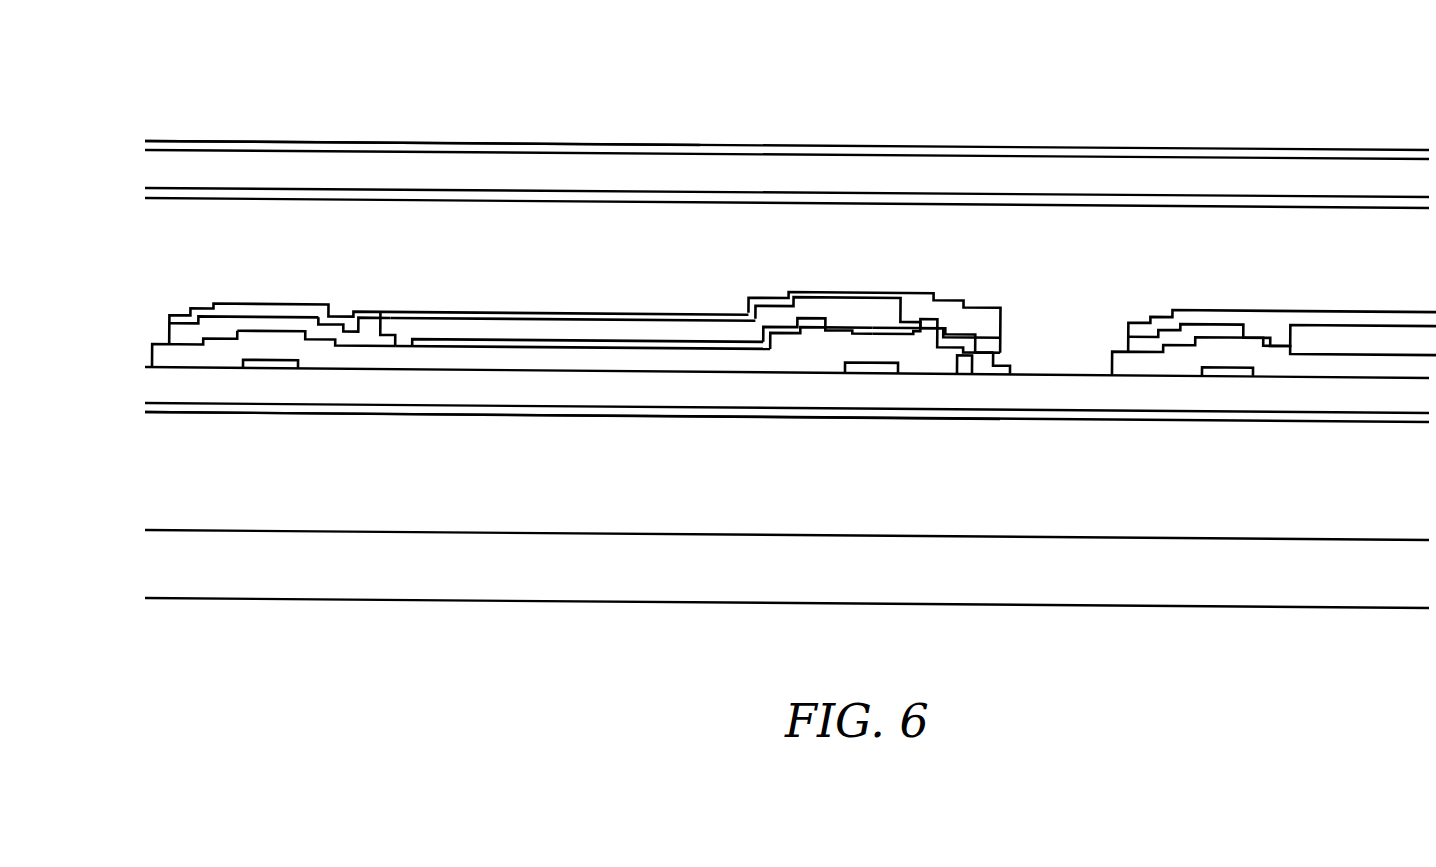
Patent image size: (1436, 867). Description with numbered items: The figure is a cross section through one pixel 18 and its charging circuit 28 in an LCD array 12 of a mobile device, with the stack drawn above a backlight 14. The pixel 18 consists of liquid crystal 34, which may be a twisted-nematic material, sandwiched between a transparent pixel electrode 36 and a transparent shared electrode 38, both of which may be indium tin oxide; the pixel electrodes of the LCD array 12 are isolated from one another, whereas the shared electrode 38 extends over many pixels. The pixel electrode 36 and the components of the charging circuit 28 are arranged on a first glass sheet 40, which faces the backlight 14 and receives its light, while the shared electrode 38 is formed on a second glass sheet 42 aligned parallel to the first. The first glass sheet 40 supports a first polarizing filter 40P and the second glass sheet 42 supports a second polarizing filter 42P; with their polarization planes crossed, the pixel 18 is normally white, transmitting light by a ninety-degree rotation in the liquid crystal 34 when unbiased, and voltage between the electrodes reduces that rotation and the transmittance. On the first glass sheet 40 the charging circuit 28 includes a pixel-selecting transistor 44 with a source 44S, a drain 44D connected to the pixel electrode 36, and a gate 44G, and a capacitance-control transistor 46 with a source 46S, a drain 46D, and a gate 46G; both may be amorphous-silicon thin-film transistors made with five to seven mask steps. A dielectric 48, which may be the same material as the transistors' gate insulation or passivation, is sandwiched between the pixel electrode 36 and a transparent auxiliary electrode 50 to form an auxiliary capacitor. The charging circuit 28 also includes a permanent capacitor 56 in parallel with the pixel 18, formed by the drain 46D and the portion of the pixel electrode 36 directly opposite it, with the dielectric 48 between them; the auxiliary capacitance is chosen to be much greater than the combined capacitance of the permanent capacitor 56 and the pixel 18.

The LCD array 12 is at (1063, 83).
The backlight 14 is at (867, 579).
The pixel 18 is at (745, 68).
The charging circuit 28 is at (995, 490).
The liquid crystal 34 is at (570, 264).
The pixel electrode 36 is at (690, 318).
The shared electrode 38 is at (665, 200).
The first glass sheet 40 is at (867, 404).
The first polarizing filter 40P is at (525, 414).
The second glass sheet 42 is at (867, 184).
The second polarizing filter 42P is at (300, 143).
The pixel-selecting transistor 44 is at (272, 275).
The gate of pixel-selecting transistor 44G is at (268, 370).
The source of pixel-selecting transistor 44S is at (186, 340).
The drain of pixel-selecting transistor 44D is at (363, 341).
The capacitance-control transistor 46 is at (870, 275).
The gate of capacitance-control transistor 46G is at (882, 377).
The source of capacitance-control transistor 46S is at (788, 341).
The drain of capacitance-control transistor 46D is at (962, 347).
The dielectric 48 is at (471, 328).
The auxiliary electrode 50 is at (695, 346).
The permanent capacitor 56 is at (980, 299).